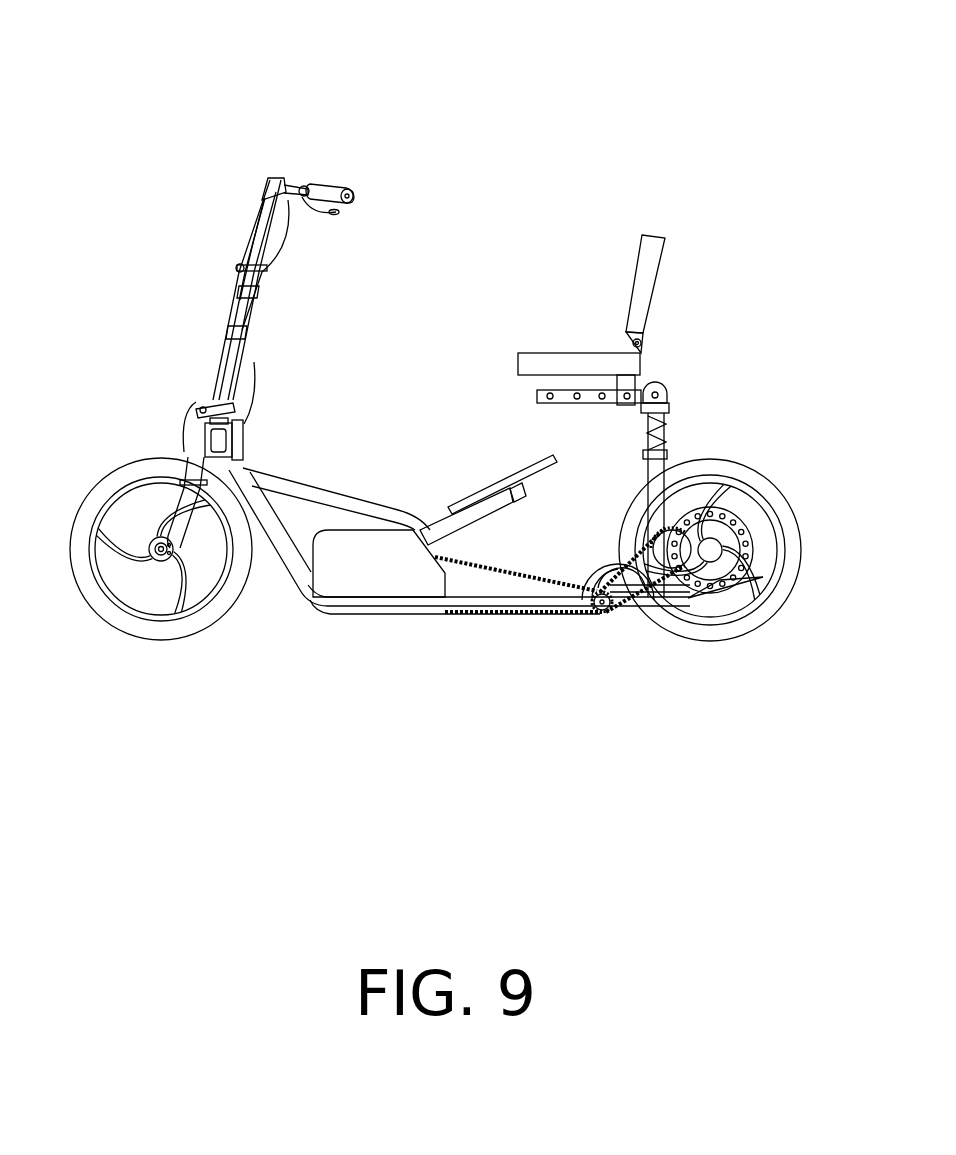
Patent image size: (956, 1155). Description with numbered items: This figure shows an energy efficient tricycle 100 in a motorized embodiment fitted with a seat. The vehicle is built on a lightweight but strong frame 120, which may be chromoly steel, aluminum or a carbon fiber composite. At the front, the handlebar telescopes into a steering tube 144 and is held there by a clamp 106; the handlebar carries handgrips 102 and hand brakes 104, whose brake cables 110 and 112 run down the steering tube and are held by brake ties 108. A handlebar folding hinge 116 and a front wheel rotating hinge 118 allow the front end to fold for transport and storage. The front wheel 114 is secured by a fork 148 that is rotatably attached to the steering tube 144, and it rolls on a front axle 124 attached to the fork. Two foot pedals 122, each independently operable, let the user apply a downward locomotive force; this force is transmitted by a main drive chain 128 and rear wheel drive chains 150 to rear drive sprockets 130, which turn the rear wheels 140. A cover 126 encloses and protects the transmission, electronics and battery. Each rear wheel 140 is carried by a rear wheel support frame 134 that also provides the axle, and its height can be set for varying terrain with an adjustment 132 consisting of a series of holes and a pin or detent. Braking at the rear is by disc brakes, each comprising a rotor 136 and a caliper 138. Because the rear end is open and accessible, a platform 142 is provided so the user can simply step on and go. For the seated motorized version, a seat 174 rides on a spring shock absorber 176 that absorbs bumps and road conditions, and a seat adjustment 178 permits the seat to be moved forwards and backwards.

The energy efficient tricycle 100 is at (190, 95).
The handgrips 102 is at (346, 190).
The hand brakes 104 is at (340, 212).
The clamp 106 is at (240, 267).
The brake ties 108 is at (240, 292).
The brake cable 110 is at (237, 327).
The brake cable 112 is at (248, 313).
The front wheel 114 is at (118, 480).
The handlebar folding hinge 116 is at (225, 402).
The front wheel rotating hinge 118 is at (233, 442).
The frame 120 is at (333, 497).
The foot pedals 122 is at (465, 505).
The front axle 124 is at (162, 562).
The cover 126 is at (390, 565).
The main drive chain 128 is at (510, 612).
The rear drive sprockets 130 is at (600, 612).
The adjustment 132 is at (662, 585).
The rear wheel support frame 134 is at (691, 600).
The rotor 136 is at (727, 590).
The caliper 138 is at (713, 508).
The rear wheels 140 is at (777, 605).
The platform 142 is at (615, 584).
The steering tube 144 is at (268, 186).
The fork 148 is at (186, 562).
The rear wheel drive chains 150 is at (670, 590).
The seat 174 is at (642, 297).
The spring shock absorber 176 is at (665, 423).
The seat adjustment 178 is at (545, 400).